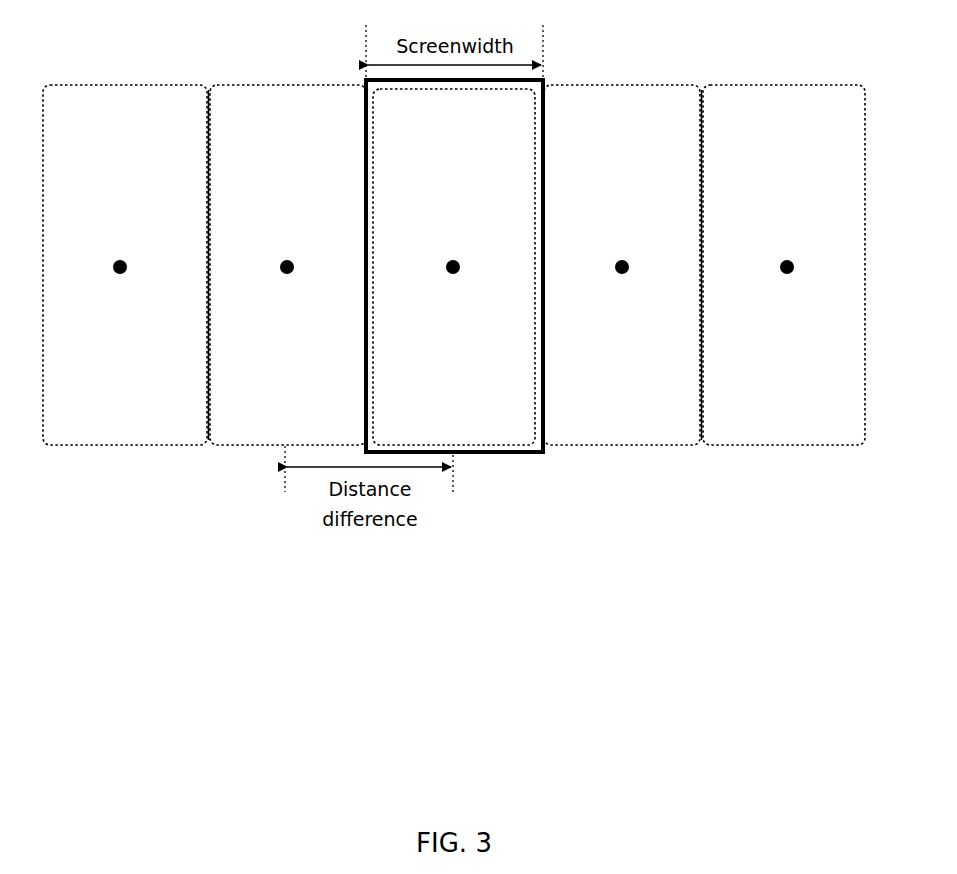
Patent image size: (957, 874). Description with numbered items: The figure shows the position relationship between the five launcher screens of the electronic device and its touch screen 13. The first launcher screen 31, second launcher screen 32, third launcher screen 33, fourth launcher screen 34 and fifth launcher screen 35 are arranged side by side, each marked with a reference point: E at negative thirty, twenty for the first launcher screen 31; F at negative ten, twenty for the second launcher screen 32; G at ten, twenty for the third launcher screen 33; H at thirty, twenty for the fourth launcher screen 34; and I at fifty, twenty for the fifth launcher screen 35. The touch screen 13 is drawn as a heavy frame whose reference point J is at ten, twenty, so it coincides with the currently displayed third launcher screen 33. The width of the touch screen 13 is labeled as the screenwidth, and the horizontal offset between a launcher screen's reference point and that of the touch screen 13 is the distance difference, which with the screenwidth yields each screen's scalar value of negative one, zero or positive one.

The touch screen 13 is at (545, 82).
The first launcher screen 31 is at (125, 265).
The second launcher screen 32 is at (288, 265).
The third launcher screen 33 is at (454, 267).
The fourth launcher screen 34 is at (622, 265).
The fifth launcher screen 35 is at (784, 265).